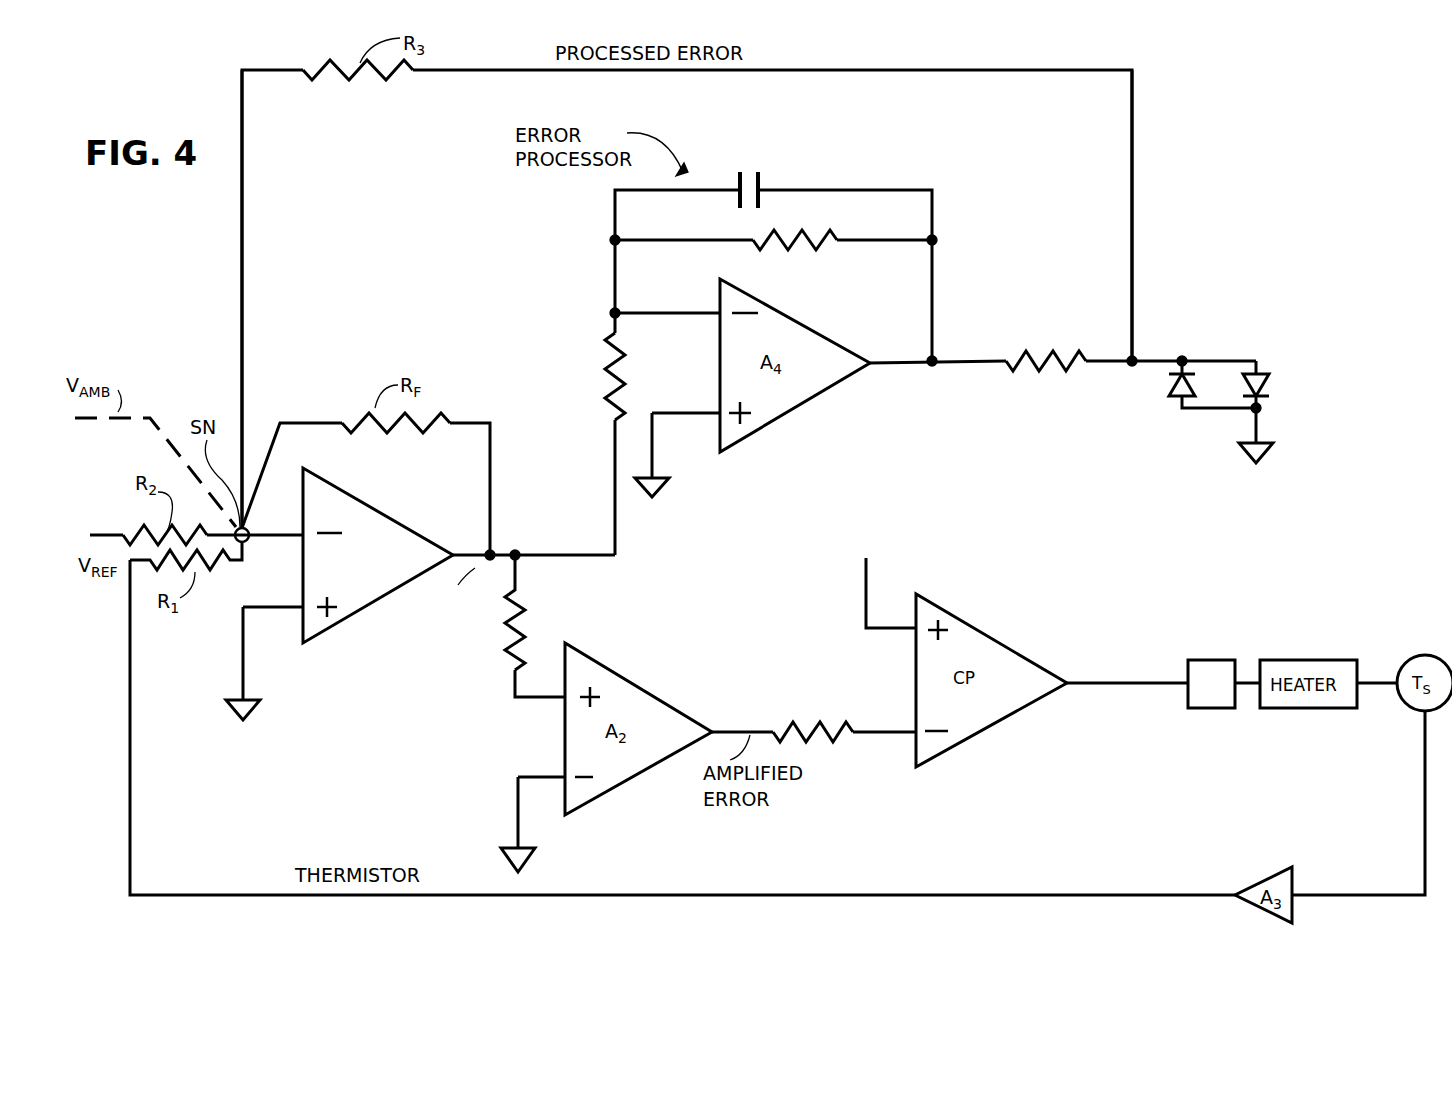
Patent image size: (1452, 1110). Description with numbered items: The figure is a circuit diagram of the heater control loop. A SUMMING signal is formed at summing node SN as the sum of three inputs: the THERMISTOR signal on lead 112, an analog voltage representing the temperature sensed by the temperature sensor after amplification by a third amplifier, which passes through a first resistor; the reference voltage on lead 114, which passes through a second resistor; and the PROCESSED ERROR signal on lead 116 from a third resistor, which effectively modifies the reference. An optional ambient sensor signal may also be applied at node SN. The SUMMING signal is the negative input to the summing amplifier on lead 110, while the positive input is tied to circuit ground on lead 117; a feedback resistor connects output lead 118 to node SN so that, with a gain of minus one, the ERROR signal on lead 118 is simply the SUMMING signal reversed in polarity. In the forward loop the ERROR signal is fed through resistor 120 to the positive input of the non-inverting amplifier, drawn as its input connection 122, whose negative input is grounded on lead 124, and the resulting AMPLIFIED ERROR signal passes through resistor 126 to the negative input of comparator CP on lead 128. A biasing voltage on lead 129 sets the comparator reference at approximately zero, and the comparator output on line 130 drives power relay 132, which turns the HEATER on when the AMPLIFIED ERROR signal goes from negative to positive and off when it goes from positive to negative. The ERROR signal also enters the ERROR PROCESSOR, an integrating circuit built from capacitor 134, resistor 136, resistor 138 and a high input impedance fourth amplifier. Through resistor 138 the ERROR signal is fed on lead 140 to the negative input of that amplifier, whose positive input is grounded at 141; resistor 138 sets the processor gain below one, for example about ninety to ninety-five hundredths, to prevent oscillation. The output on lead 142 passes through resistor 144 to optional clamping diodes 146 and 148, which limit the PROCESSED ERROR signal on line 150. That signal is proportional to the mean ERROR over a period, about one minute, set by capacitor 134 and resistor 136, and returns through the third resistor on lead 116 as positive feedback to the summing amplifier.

The lead 110 is at (290, 537).
The lead 112 is at (128, 672).
The lead 114 is at (107, 540).
The lead 116 is at (243, 272).
The lead 117 is at (243, 670).
The output lead 118 is at (470, 550).
The resistor 120 is at (530, 620).
The non-inverting input line of amplifier A2 122 is at (537, 702).
The lead 124 is at (518, 813).
The resistor 126 is at (823, 717).
The lead 128 is at (887, 733).
The lead 129 is at (863, 610).
The line 130 is at (1148, 684).
The power relay 132 is at (1217, 708).
The capacitor 134 is at (753, 172).
The resistor 136 is at (777, 250).
The resistor 138 is at (607, 367).
The lead 140 is at (685, 312).
The ground 141 is at (656, 455).
The lead 142 is at (999, 365).
The resistor 144 is at (1060, 352).
The clamping diode 146 is at (1170, 376).
The clamping diode 148 is at (1271, 383).
The line 150 is at (1132, 171).